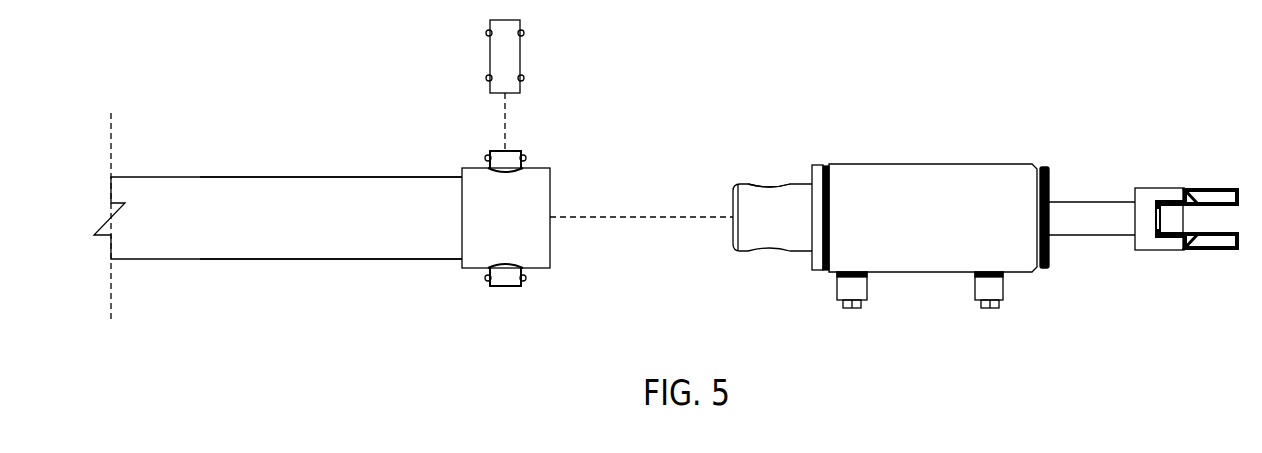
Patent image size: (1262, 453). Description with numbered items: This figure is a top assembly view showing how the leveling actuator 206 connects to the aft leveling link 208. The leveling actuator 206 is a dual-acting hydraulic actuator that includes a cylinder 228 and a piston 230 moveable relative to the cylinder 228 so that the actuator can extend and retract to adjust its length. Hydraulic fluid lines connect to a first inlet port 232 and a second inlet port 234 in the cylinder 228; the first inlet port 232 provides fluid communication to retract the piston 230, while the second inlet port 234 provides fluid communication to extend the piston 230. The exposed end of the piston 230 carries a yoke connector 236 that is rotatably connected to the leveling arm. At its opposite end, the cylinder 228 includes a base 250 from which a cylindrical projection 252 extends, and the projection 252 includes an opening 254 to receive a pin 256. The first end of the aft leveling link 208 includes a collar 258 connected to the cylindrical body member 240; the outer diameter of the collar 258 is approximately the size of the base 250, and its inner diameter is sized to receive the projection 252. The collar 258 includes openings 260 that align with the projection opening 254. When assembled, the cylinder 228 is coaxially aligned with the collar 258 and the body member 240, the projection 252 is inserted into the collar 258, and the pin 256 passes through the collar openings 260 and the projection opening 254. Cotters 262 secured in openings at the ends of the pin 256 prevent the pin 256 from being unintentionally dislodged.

The leveling actuator 206 is at (939, 178).
The aft leveling link 208 is at (196, 173).
The cylinder 228 is at (882, 164).
The piston 230 is at (1090, 222).
The first inlet port 232 is at (990, 312).
The second inlet port 234 is at (852, 310).
The yoke connector 236 is at (1210, 195).
The cylindrical body member 240 is at (280, 233).
The base 250 is at (811, 262).
The projection 252 is at (735, 205).
The opening 254 is at (771, 187).
The pin 256 is at (508, 53).
The collar 258 is at (535, 240).
The openings 260 is at (505, 266).
The cotters 262 is at (487, 79).